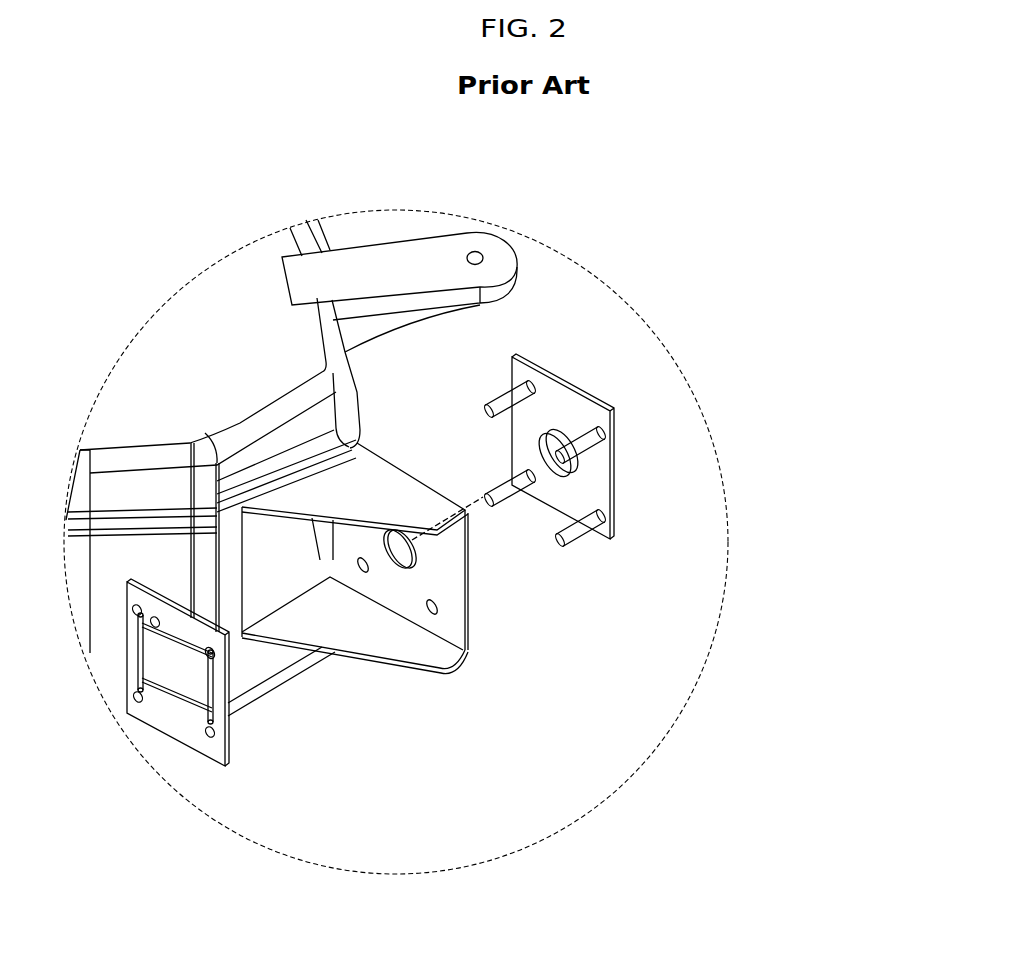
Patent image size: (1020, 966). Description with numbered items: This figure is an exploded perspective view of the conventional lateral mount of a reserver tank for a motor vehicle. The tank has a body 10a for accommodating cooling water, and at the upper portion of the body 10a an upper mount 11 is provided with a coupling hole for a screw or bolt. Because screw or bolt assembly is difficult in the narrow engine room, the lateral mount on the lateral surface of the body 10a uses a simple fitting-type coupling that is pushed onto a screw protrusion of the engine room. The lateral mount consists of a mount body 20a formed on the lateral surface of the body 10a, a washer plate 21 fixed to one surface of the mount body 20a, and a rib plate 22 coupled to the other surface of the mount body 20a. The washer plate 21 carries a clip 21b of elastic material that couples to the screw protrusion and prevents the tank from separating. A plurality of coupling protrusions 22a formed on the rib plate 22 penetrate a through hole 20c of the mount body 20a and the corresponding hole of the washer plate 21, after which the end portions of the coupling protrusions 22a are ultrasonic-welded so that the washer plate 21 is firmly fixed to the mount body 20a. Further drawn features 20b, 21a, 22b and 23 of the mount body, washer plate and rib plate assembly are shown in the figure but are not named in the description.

The body 10a is at (212, 305).
The upper mount 11 is at (437, 219).
The mount body 20a is at (457, 668).
The bracket hole 20b is at (440, 606).
The through hole 20c is at (370, 566).
The washer plate 21 is at (232, 733).
The slot 21a is at (232, 727).
The clip 21b is at (176, 698).
The rib plate 22 is at (592, 386).
The coupling protrusions 22a is at (608, 432).
The nut 22b is at (578, 470).
The through hole 23 is at (412, 542).